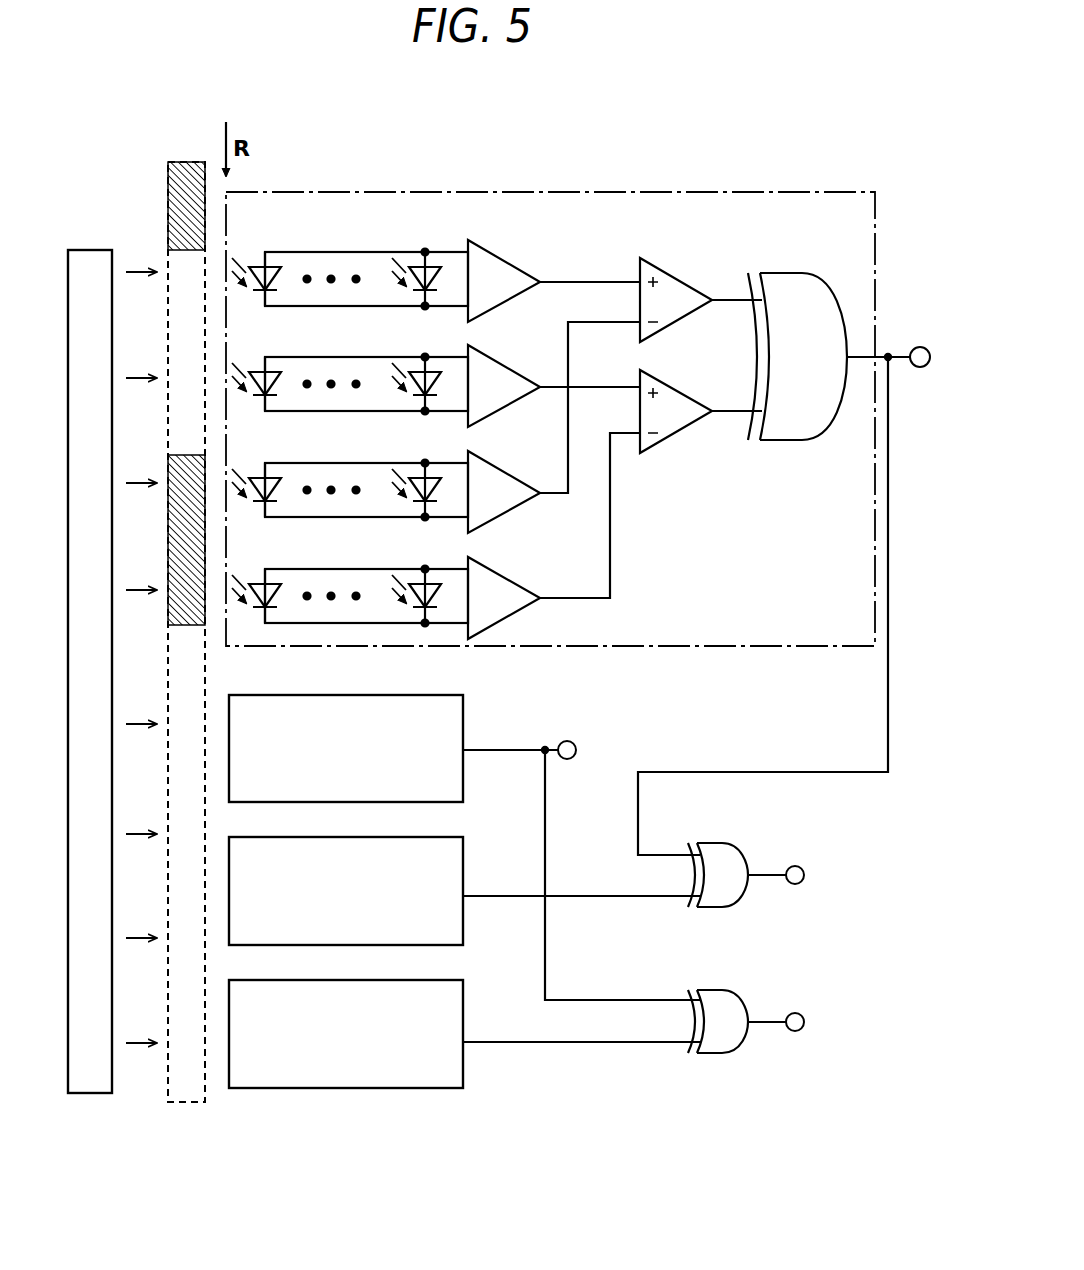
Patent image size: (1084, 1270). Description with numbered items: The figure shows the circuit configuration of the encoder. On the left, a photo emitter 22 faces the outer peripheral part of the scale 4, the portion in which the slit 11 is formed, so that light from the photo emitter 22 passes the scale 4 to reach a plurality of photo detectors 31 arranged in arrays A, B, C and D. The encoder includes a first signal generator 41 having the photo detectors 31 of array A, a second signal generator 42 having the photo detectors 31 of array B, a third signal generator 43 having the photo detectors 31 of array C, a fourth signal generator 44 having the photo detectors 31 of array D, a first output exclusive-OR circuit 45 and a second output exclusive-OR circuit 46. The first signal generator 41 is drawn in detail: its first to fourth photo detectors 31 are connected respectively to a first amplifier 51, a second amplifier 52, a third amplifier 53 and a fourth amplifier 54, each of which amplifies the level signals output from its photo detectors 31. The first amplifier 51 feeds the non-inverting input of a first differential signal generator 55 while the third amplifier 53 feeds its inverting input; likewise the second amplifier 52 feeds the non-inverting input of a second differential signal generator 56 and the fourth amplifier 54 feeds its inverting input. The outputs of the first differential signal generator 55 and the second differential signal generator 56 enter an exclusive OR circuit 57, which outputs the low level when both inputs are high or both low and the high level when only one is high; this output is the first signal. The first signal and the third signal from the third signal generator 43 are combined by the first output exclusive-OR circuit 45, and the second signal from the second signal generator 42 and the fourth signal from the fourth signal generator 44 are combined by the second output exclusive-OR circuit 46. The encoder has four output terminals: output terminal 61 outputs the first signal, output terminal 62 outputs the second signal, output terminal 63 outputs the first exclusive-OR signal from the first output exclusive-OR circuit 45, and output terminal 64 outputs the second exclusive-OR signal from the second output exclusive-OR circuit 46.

The scale 4 is at (183, 160).
The slit 11 is at (168, 343).
The photo emitter 22 is at (92, 250).
The photo detectors 31 is at (278, 264).
The first signal generator 41 is at (579, 192).
The second signal generator 42 is at (463, 710).
The third signal generator 43 is at (463, 852).
The fourth signal generator 44 is at (463, 1000).
The first output exclusive-OR circuit 45 is at (720, 843).
The second output exclusive-OR circuit 46 is at (718, 1053).
The first amplifier 51 is at (523, 275).
The second amplifier 52 is at (520, 378).
The third amplifier 53 is at (528, 481).
The fourth amplifier 54 is at (523, 585).
The first differential signal generator 55 is at (685, 280).
The second differential signal generator 56 is at (685, 394).
The exclusive OR circuit 57 is at (788, 441).
The output terminal 61 is at (920, 367).
The output terminal 62 is at (576, 750).
The output terminal 63 is at (804, 875).
The output terminal 64 is at (804, 1022).